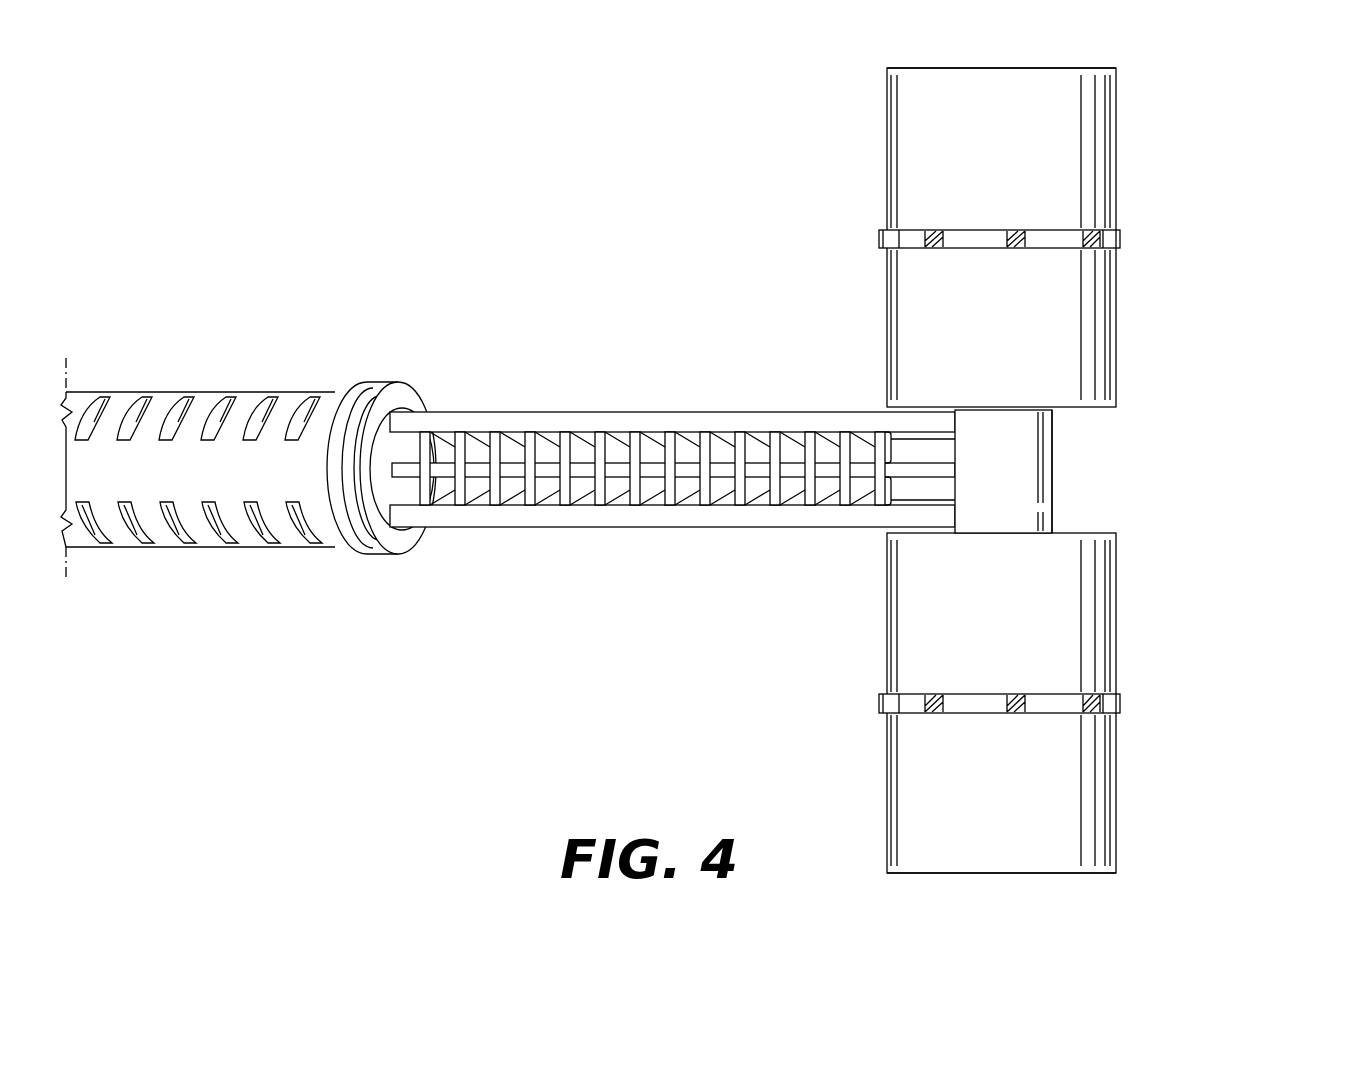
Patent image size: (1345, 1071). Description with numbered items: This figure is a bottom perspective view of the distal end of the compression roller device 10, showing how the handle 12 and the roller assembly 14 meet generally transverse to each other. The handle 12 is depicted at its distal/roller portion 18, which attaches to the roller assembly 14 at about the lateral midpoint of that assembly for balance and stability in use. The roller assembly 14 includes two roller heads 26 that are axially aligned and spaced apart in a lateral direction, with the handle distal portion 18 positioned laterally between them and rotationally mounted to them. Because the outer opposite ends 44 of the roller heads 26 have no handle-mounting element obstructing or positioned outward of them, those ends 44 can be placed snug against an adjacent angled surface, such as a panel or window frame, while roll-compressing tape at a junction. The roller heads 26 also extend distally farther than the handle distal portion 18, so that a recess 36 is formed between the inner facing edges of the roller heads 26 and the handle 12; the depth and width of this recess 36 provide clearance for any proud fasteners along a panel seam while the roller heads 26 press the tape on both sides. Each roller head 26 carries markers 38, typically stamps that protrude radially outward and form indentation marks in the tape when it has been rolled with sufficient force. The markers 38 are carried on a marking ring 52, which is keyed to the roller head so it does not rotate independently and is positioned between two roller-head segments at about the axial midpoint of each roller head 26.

The compression roller device 10 is at (698, 475).
The handle 12 is at (450, 567).
The roller assembly 14 is at (1063, 475).
The distal/roller portion 18 is at (1052, 477).
The roller heads 26 is at (1048, 475).
The recess 36 is at (1072, 459).
The marker 38 is at (1053, 516).
The outer opposite ends 44 is at (1020, 68).
The marking ring 52 is at (972, 715).